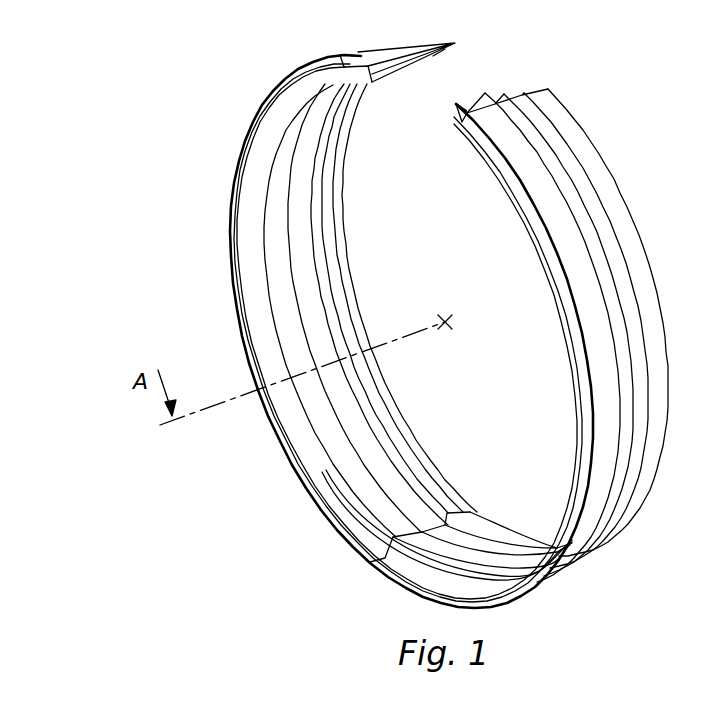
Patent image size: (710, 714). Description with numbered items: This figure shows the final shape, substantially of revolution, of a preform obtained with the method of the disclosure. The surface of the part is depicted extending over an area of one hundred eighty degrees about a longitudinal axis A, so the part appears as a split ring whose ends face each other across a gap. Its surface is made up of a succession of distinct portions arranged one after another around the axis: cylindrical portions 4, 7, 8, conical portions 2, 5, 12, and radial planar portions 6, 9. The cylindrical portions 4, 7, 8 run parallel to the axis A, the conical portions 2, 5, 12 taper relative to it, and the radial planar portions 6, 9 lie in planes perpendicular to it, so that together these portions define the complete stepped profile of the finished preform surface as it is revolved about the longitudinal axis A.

The conical portion 2 is at (352, 467).
The cylindrical portion 4 is at (305, 287).
The conical portion 5 is at (315, 183).
The radial planar portion 6 is at (332, 478).
The cylindrical portion 7 is at (340, 523).
The cylindrical portion 8 is at (272, 425).
The radial planar portion 9 is at (250, 346).
The conical portion 12 is at (333, 168).